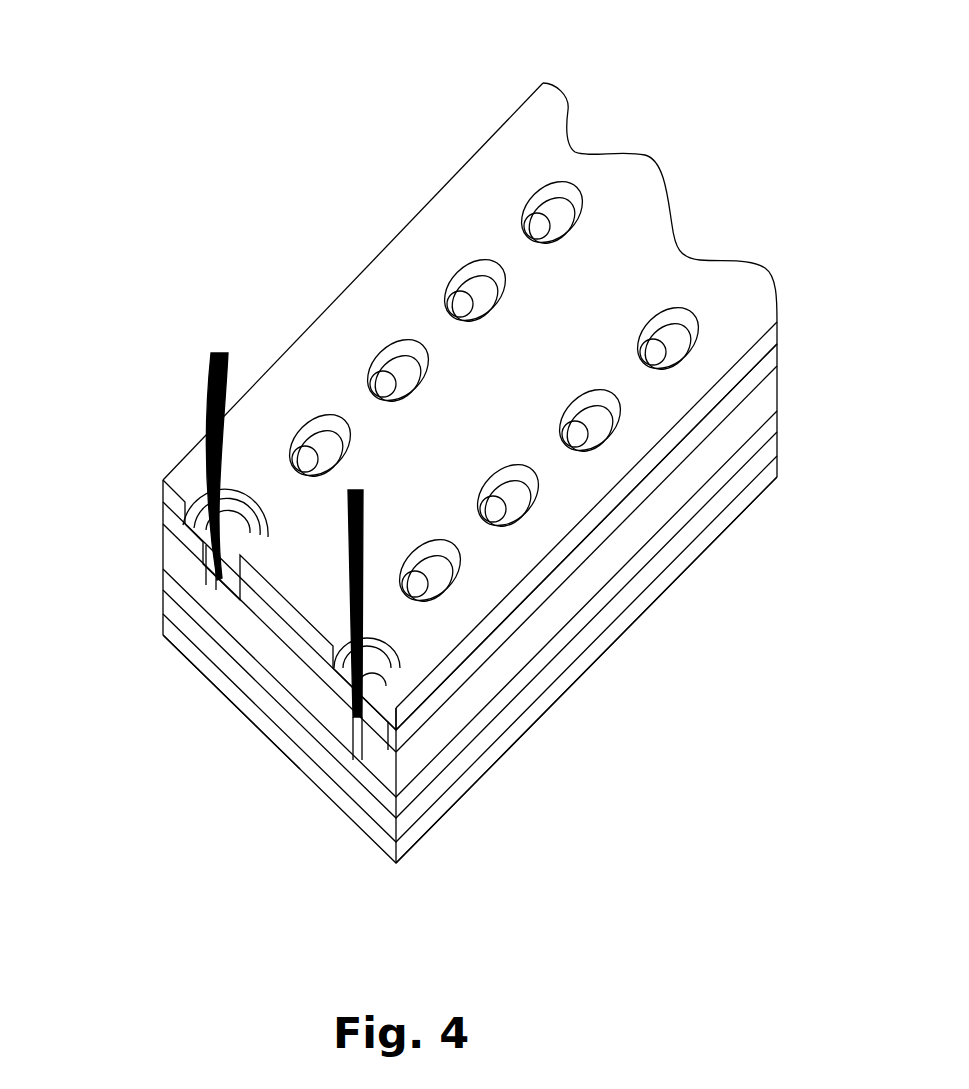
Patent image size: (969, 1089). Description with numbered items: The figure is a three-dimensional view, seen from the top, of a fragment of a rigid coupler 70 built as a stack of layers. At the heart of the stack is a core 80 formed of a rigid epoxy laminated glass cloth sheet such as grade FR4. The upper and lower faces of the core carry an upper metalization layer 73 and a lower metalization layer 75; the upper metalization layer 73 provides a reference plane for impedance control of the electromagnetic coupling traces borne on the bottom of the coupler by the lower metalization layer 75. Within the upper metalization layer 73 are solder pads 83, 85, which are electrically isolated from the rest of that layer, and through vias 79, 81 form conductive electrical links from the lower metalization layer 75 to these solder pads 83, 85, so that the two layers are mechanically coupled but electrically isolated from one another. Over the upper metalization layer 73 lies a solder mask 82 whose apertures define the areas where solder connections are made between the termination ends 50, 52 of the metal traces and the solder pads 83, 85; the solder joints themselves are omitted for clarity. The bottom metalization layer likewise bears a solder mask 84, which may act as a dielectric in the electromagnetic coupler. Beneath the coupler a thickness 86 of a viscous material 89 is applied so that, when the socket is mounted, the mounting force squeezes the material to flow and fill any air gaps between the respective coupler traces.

The multilayer substrate with pins 70 is at (323, 157).
The termination end 50 is at (228, 368).
The termination end 52 is at (380, 510).
The solder mask 82 is at (248, 425).
The solder pad 83 is at (205, 520).
The upper metalization layer 73 is at (163, 510).
The core 80 is at (163, 533).
The lower metalization layer 75 is at (163, 572).
The solder mask 84 is at (163, 593).
The viscous material 89 is at (163, 622).
The through via 79 is at (205, 565).
The solder pad 85 is at (400, 655).
The through via 81 is at (425, 760).
The thickness 86 is at (425, 840).